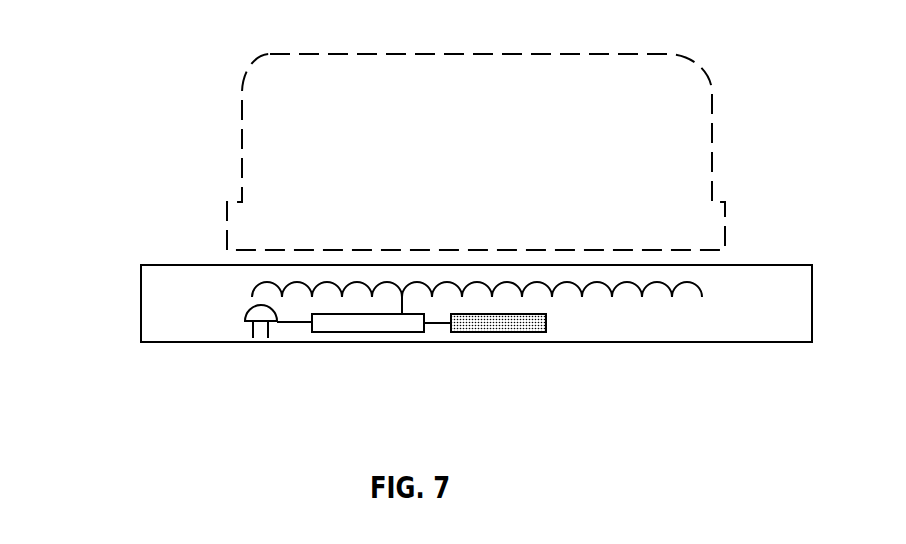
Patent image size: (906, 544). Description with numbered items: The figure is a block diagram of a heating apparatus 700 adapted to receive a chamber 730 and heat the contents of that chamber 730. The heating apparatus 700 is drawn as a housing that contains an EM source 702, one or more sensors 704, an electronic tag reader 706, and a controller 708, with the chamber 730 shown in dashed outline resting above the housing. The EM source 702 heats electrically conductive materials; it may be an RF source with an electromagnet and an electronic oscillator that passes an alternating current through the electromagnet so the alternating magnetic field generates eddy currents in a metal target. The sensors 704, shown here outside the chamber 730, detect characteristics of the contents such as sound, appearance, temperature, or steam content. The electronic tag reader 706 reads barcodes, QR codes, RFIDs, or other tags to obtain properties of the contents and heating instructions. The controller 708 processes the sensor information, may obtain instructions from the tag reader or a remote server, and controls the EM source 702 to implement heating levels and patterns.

The heating apparatus 700 is at (122, 351).
The EM source 702 is at (666, 313).
The sensors 704 is at (245, 322).
The electronic tag reader 706 is at (500, 332).
The controller 708 is at (338, 332).
The chamber 730 is at (495, 164).